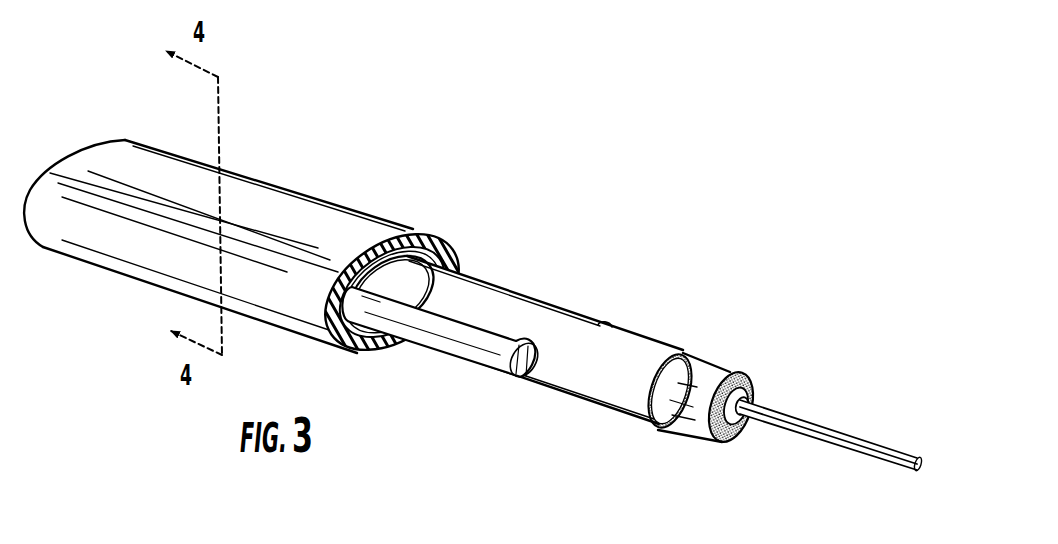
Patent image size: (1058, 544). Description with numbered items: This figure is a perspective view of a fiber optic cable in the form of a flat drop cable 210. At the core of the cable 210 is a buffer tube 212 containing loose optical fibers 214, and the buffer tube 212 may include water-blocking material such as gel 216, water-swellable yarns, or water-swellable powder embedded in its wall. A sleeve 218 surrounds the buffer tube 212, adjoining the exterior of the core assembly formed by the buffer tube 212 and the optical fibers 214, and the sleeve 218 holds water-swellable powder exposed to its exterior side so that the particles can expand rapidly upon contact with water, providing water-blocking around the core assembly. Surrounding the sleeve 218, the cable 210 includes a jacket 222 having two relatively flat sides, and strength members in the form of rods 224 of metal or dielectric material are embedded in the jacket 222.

The flat drop cable 210 is at (473, 314).
The buffer tube 212 is at (708, 372).
The optical fibers 214 is at (883, 458).
The gel 216 is at (757, 392).
The sleeve 218 is at (656, 349).
The jacket 222 is at (353, 226).
The rods 224 is at (460, 335).